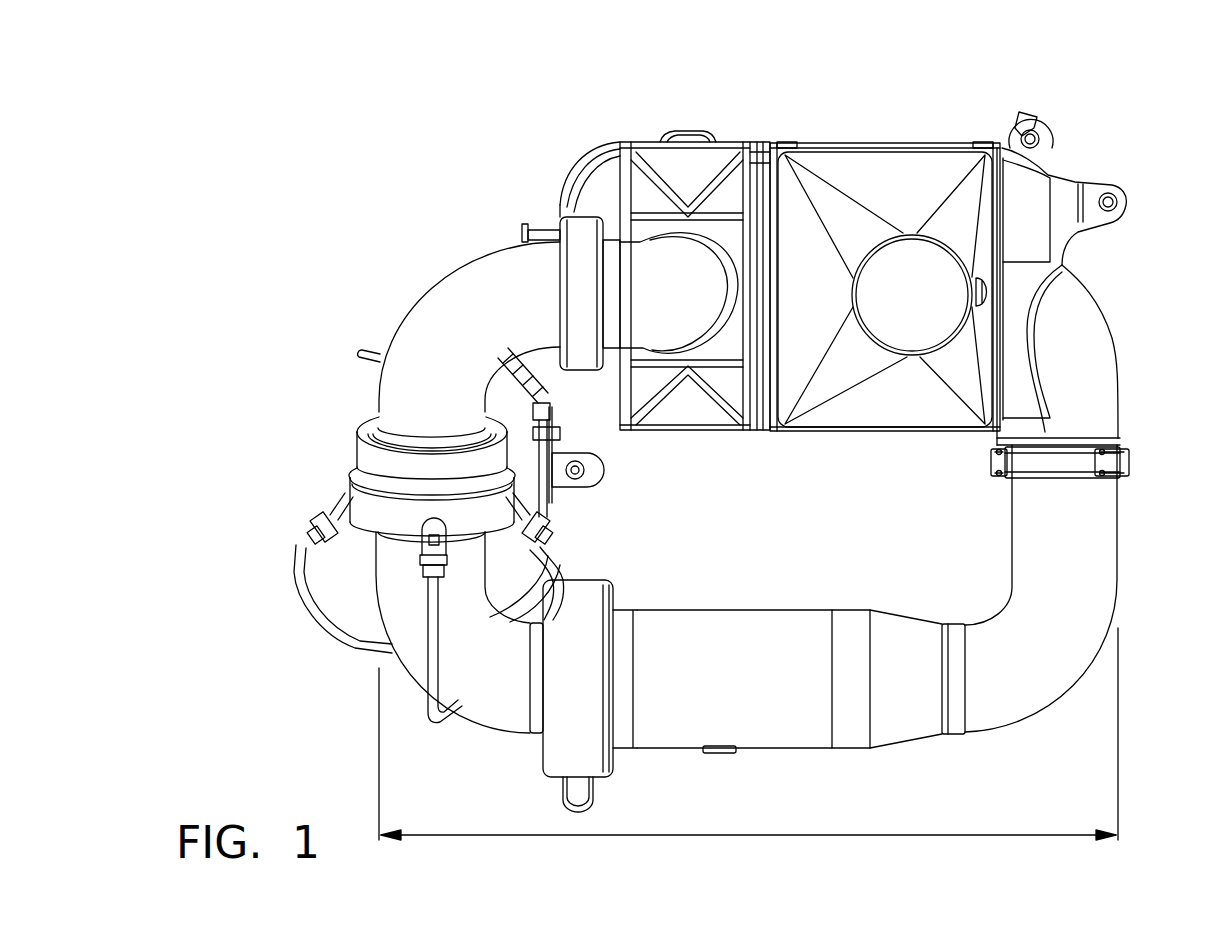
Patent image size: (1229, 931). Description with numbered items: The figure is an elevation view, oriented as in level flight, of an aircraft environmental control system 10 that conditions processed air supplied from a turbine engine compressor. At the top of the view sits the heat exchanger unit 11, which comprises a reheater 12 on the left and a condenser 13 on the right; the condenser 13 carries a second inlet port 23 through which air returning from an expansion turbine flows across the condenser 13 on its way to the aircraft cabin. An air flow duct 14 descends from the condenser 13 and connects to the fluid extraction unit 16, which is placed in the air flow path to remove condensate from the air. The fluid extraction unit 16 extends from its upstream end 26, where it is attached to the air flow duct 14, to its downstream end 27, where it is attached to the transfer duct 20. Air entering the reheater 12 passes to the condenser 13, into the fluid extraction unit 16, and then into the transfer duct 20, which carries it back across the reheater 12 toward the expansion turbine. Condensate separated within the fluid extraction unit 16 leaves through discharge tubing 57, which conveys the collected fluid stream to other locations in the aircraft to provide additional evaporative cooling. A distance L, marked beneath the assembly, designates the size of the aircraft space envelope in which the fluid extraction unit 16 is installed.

The aircraft environmental control system 10 is at (400, 98).
The heat exchanger unit 11 is at (765, 132).
The reheater 12 is at (647, 137).
The condenser 13 is at (888, 142).
The air flow duct 14 is at (1125, 517).
The fluid extraction unit 16 is at (850, 752).
The transfer duct 20 is at (423, 292).
The second inlet port 23 is at (929, 303).
The upstream end 26 is at (1130, 452).
The downstream end 27 is at (352, 472).
The discharge tubing 57 is at (548, 510).
The distance L is at (728, 833).